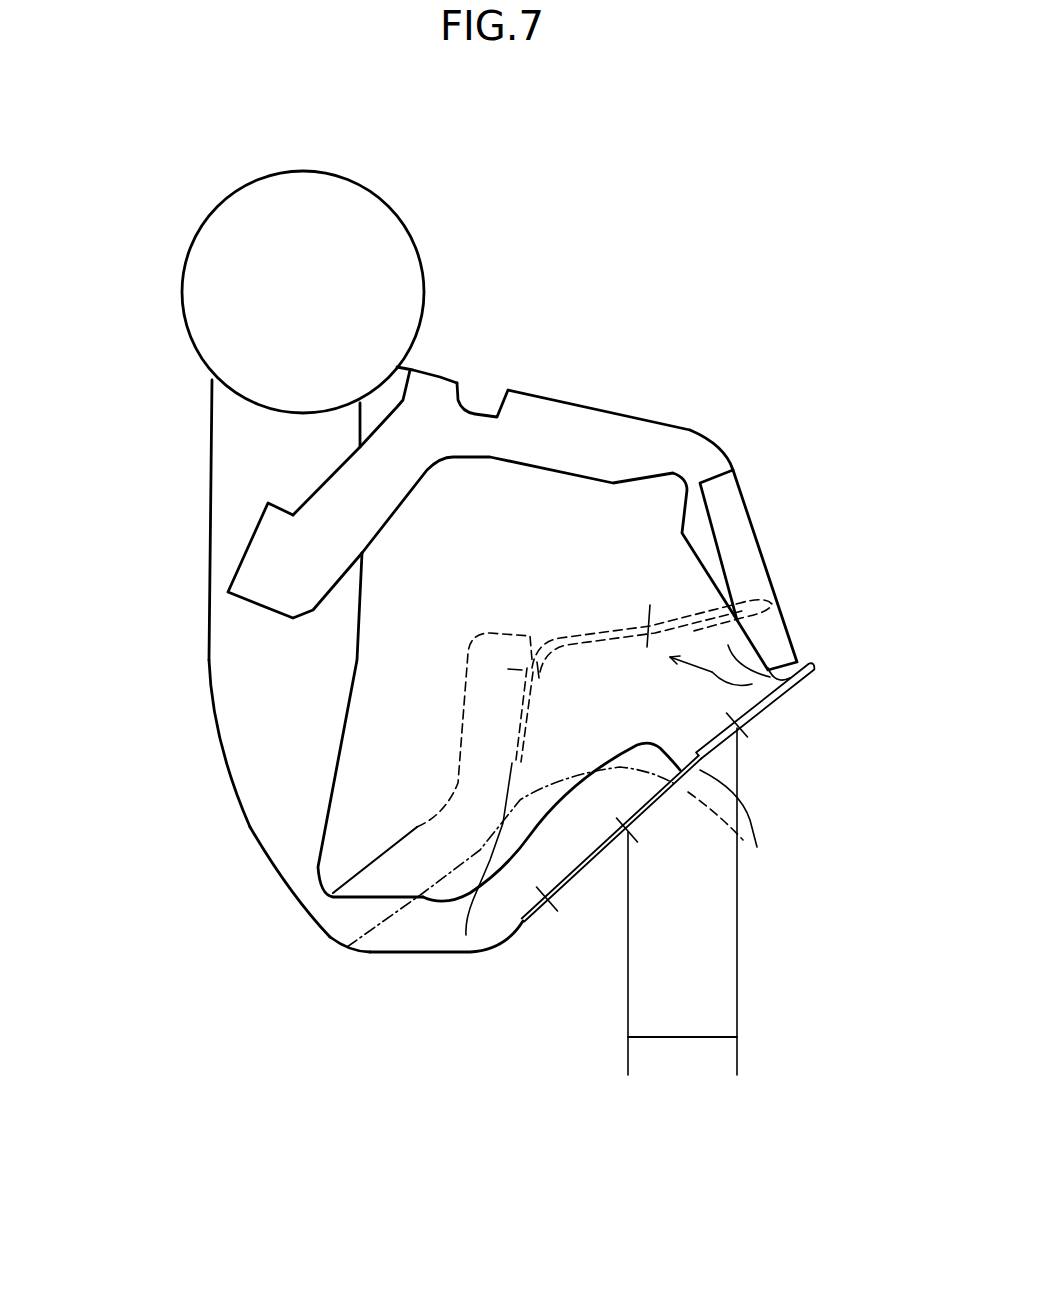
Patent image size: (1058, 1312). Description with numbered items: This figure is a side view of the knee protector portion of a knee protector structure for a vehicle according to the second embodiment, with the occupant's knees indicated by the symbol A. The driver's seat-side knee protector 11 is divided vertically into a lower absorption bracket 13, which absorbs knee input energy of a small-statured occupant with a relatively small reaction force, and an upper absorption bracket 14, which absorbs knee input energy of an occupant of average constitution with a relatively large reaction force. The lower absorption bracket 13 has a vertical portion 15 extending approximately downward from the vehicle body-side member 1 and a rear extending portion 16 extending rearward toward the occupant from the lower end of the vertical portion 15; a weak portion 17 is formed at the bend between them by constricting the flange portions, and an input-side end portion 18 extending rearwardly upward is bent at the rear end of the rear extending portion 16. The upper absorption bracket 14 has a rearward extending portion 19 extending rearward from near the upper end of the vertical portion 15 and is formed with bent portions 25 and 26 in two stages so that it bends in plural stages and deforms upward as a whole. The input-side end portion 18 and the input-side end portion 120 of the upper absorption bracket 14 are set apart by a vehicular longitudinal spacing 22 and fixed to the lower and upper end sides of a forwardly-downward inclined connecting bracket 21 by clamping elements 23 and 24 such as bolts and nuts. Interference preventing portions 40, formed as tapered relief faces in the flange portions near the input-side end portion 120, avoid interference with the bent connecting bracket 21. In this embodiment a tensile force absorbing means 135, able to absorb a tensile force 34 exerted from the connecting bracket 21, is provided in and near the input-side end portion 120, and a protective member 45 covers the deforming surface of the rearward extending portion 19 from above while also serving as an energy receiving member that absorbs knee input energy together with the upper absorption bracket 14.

The vehicle body-side member 1 is at (181, 292).
The bent portion 25 is at (413, 368).
The upper absorption bracket 14 is at (552, 355).
The rearward extending portion 19 is at (605, 387).
The bent portion 26 is at (700, 432).
The protective member 45 is at (753, 502).
The tensile force absorbing means 135 is at (798, 580).
The interference preventing portion 40 is at (790, 670).
The input-side end portion 120 is at (773, 705).
The tensile force 34 is at (805, 683).
The clamping element 23 is at (625, 835).
The input-side end portion 18 is at (547, 900).
The connecting bracket 21 is at (739, 735).
The clamping element 24 is at (740, 740).
The vehicular longitudinal spacing 22 is at (680, 1038).
The vertical portion 15 is at (225, 475).
The lower absorption bracket 13 is at (198, 697).
The knee protector 11 is at (215, 845).
The weak portion 17 is at (267, 907).
The rear extending portion 16 is at (395, 935).
The knees A is at (466, 935).